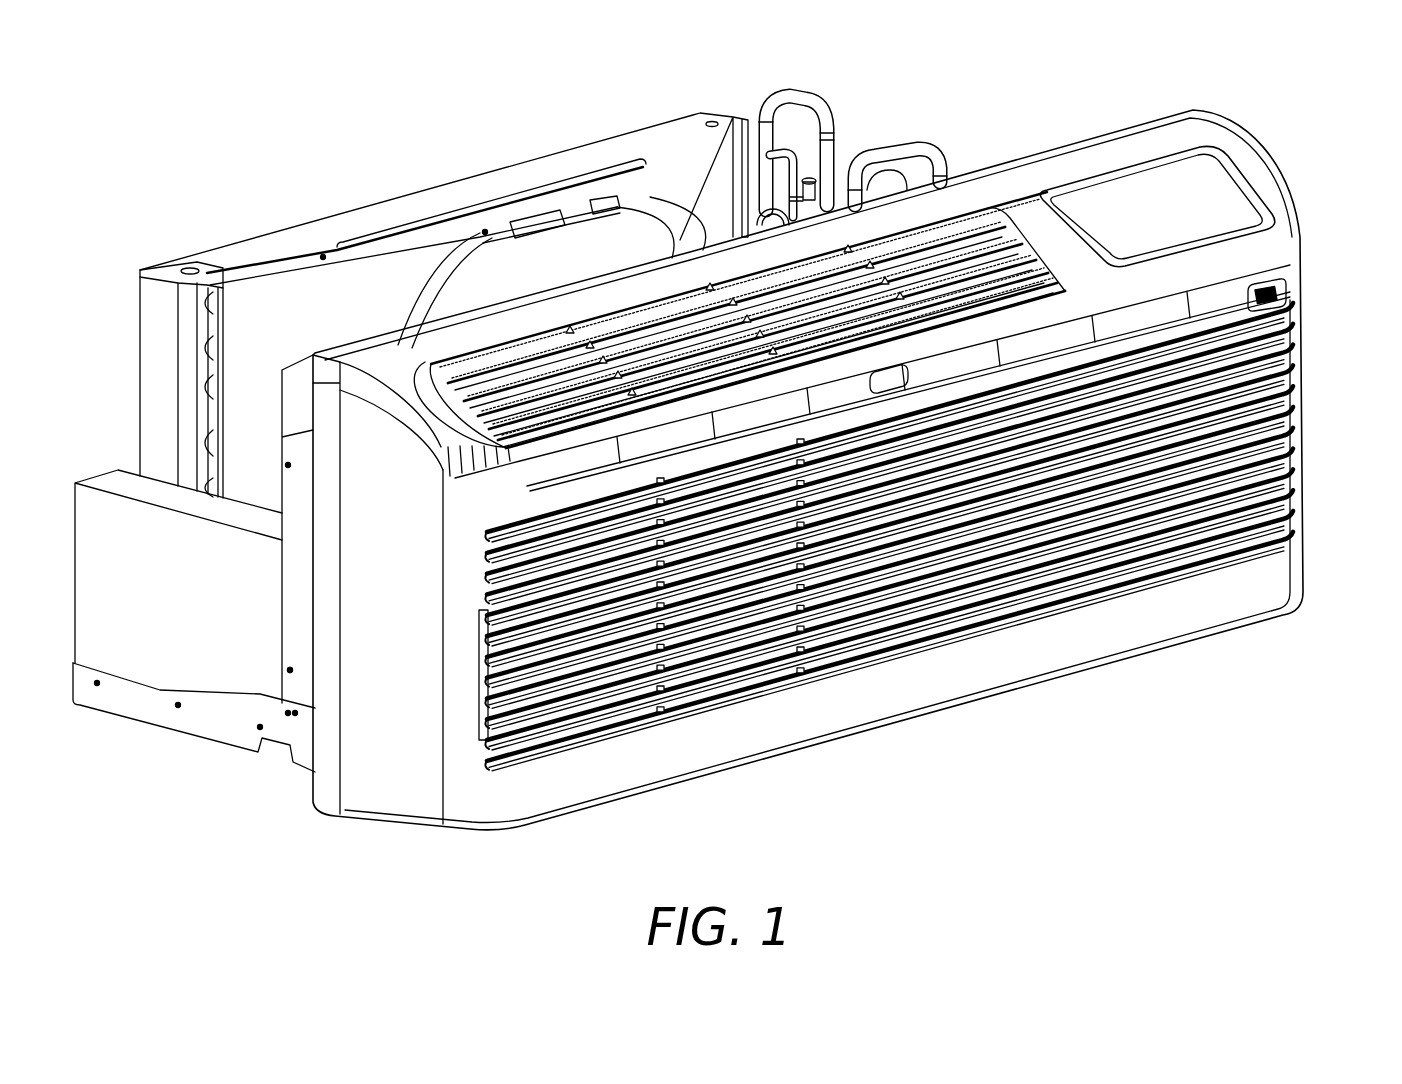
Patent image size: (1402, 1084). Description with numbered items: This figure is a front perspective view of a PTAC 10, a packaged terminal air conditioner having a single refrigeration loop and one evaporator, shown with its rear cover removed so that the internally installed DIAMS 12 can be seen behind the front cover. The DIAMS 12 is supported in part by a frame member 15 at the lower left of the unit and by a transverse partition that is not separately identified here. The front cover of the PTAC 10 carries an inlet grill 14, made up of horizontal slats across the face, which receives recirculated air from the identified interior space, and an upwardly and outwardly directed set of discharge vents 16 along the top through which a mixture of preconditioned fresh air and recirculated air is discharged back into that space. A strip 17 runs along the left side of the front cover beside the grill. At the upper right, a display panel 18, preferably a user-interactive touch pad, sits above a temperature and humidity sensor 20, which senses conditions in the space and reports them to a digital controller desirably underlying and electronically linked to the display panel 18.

The PTAC 10 is at (734, 469).
The DIAMS 12 is at (157, 648).
The inlet grill 14 is at (854, 469).
The frame member 15 is at (225, 728).
The discharge vents 16 is at (967, 200).
The side strip 17 is at (478, 690).
The display panel 18 is at (1152, 188).
The temperature and humidity sensor 20 is at (1278, 296).